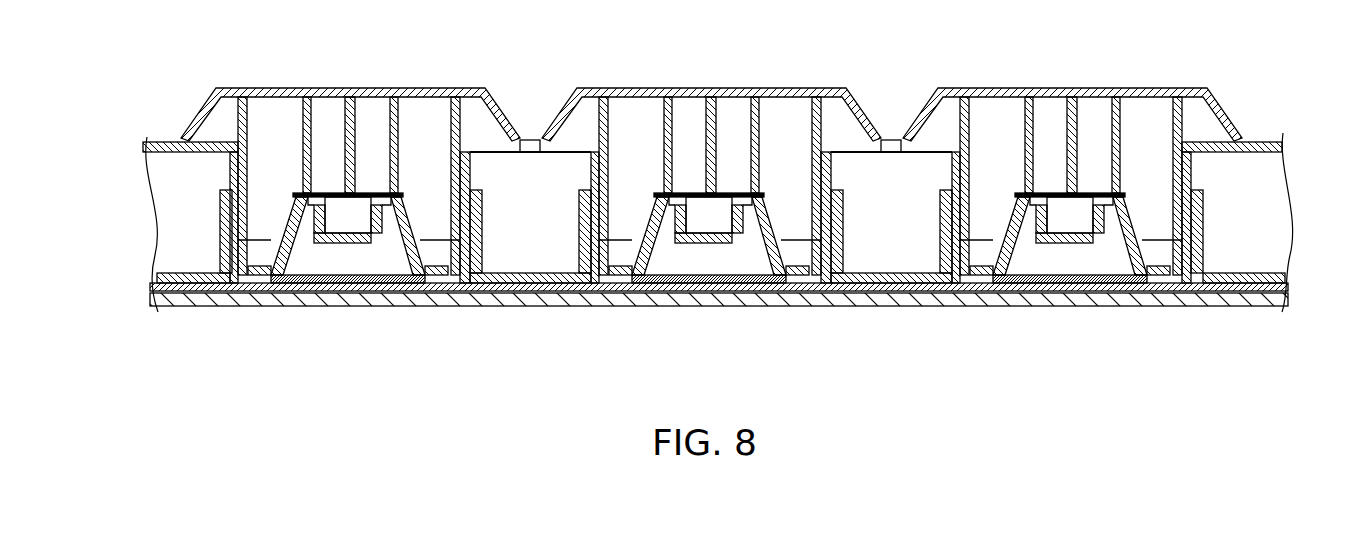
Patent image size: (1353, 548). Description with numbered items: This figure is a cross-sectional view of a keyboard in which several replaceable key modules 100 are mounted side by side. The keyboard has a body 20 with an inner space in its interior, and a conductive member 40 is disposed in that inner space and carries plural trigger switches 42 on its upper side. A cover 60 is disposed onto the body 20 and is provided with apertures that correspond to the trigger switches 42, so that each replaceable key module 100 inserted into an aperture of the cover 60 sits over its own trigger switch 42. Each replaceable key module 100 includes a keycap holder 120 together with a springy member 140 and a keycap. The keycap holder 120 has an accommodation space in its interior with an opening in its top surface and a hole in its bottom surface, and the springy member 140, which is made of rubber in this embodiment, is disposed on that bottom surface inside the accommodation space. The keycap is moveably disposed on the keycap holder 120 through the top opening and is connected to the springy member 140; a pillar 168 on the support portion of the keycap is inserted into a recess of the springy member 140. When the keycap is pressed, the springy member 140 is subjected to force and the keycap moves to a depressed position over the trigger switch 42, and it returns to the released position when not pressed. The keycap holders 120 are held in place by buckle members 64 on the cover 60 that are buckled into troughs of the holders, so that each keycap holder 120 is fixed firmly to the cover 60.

The body 20 is at (927, 299).
The conductive member 40 is at (800, 293).
The trigger switch 42 is at (383, 281).
The cover 60 is at (1197, 210).
The buckle member 64 is at (220, 207).
The replaceable key module 100 is at (372, 88).
The keycap holder 120 is at (228, 174).
The springy member 140 is at (352, 212).
The pillar 168 is at (312, 235).